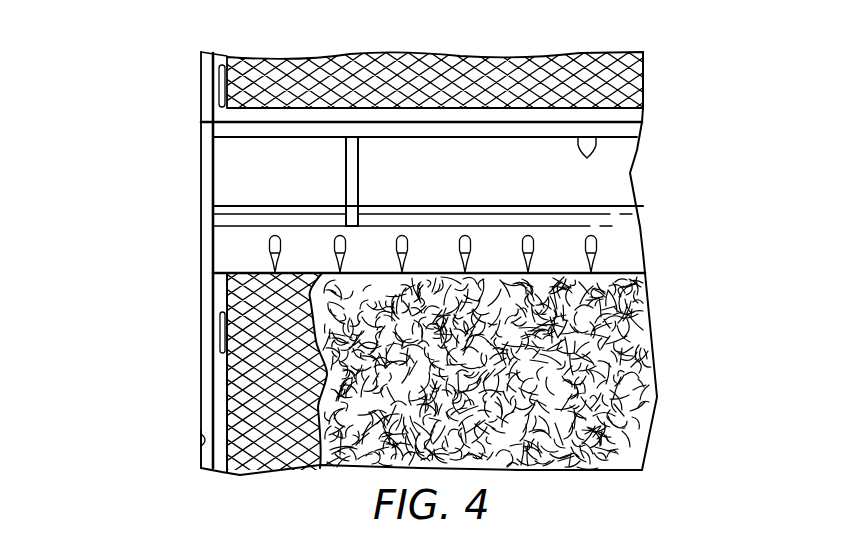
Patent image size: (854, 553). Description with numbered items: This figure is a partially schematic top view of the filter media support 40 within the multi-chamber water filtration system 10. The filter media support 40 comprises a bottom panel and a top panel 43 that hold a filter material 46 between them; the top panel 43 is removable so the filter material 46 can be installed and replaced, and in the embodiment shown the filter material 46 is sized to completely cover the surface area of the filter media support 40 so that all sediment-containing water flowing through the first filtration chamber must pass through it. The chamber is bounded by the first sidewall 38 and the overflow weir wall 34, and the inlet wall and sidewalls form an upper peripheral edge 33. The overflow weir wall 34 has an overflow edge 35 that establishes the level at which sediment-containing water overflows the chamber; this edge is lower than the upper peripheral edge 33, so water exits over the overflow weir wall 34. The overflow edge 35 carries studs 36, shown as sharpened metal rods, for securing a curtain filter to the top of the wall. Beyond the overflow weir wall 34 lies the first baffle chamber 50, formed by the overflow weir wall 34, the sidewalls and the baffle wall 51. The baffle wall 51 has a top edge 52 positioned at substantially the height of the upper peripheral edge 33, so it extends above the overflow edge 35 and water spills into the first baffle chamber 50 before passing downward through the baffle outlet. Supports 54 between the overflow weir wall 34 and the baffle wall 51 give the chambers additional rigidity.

The multi-chamber water filtration system 10 is at (116, 125).
The upper peripheral edge 33 is at (203, 327).
The overflow weir wall 34 is at (550, 220).
The overflow edge 35 is at (633, 260).
The studs 36 is at (598, 245).
The first sidewall 38 is at (207, 442).
The filter media support 40 is at (223, 379).
The top panel 43 is at (222, 407).
The filter material 46 is at (650, 353).
The first baffle chamber 50 is at (618, 182).
The baffle wall 51 is at (596, 152).
The top edge 52 is at (540, 130).
The supports 54 is at (345, 183).